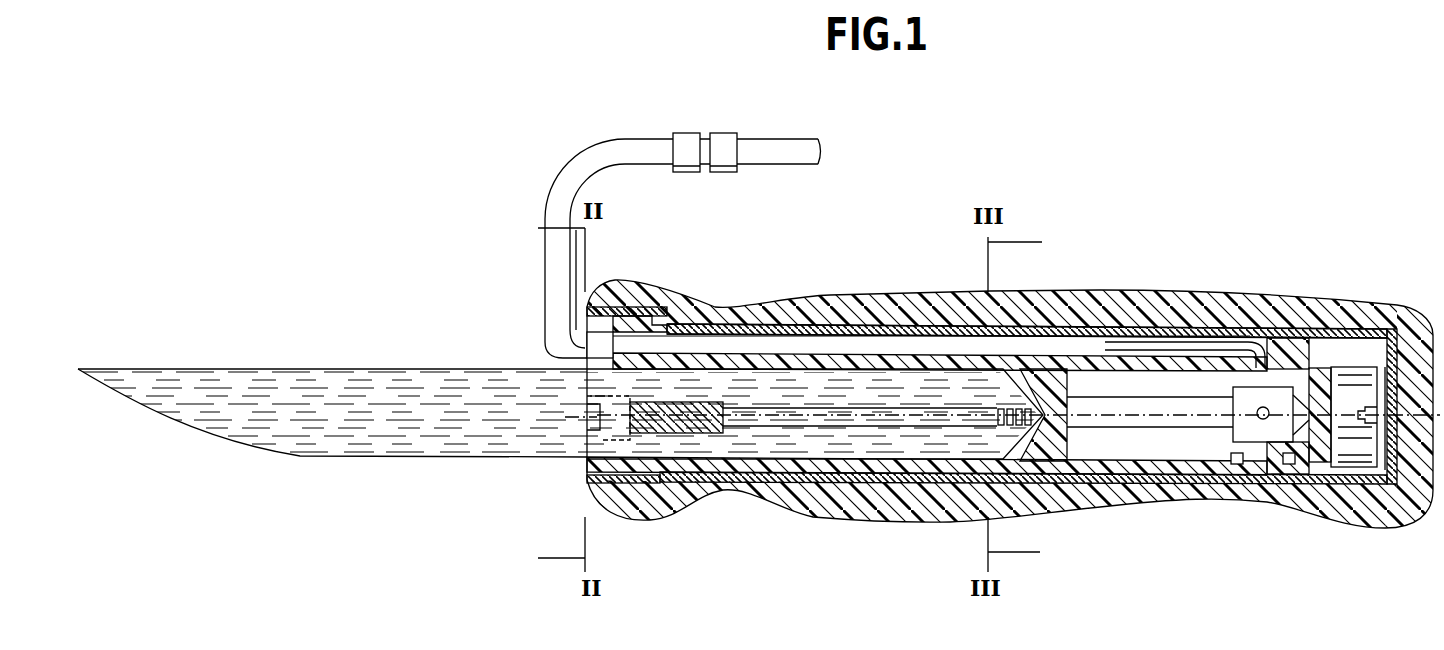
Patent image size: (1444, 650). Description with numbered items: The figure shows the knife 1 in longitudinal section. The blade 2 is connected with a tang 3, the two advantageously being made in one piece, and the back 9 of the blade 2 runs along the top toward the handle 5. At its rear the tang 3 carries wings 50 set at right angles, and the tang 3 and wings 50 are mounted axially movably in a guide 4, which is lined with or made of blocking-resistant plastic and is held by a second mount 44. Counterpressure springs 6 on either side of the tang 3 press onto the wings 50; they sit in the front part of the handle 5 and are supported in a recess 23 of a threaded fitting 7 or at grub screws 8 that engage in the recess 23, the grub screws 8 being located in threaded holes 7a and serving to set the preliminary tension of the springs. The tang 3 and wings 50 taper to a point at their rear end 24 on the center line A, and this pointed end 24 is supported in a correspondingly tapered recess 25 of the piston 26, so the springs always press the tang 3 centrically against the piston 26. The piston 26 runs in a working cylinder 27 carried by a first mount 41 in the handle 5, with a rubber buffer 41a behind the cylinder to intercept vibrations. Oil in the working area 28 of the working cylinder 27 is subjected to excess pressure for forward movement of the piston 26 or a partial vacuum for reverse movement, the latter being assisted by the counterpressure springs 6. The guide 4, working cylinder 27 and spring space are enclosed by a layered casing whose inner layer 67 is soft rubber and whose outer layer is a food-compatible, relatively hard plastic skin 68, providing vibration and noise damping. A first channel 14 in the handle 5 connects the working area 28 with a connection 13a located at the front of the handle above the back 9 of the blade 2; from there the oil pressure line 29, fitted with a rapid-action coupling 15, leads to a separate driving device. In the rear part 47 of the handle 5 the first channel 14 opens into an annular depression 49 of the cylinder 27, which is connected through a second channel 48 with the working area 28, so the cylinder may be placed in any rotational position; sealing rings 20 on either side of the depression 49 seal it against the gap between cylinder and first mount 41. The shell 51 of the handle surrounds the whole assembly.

The knife 1 is at (919, 273).
The blade 2 is at (250, 380).
The tang 3 is at (780, 402).
The guide 4 is at (688, 362).
The handle 5 is at (760, 313).
The counterpressure springs 6 is at (647, 484).
The threaded fitting 7 is at (621, 307).
The threaded holes 7a is at (603, 437).
The grub screws 8 is at (607, 424).
The back of the blade 9 is at (368, 368).
The connection 13a is at (585, 343).
The first channel 14 is at (1110, 355).
The rapid-action coupling 15 is at (718, 134).
The sealing rings 20 is at (1237, 465).
The recess 23 is at (722, 428).
The rear end 24 is at (1020, 385).
The recess 25 is at (1041, 448).
The piston 26 is at (1136, 430).
The working cylinder 27 is at (1170, 458).
The working area 28 is at (1285, 393).
The oil pressure line 29 is at (549, 186).
The first mount 41 is at (1176, 345).
The rubber buffer 41a is at (1335, 485).
The second mount 44 is at (887, 467).
The rear part 47 is at (1384, 305).
The second channel 48 is at (1278, 360).
The annular depression 49 is at (1270, 474).
The wings 50 is at (866, 416).
The shell 51 is at (804, 517).
The inner layer 67 is at (824, 326).
The plastic skin 68 is at (870, 335).
The center line A is at (996, 411).